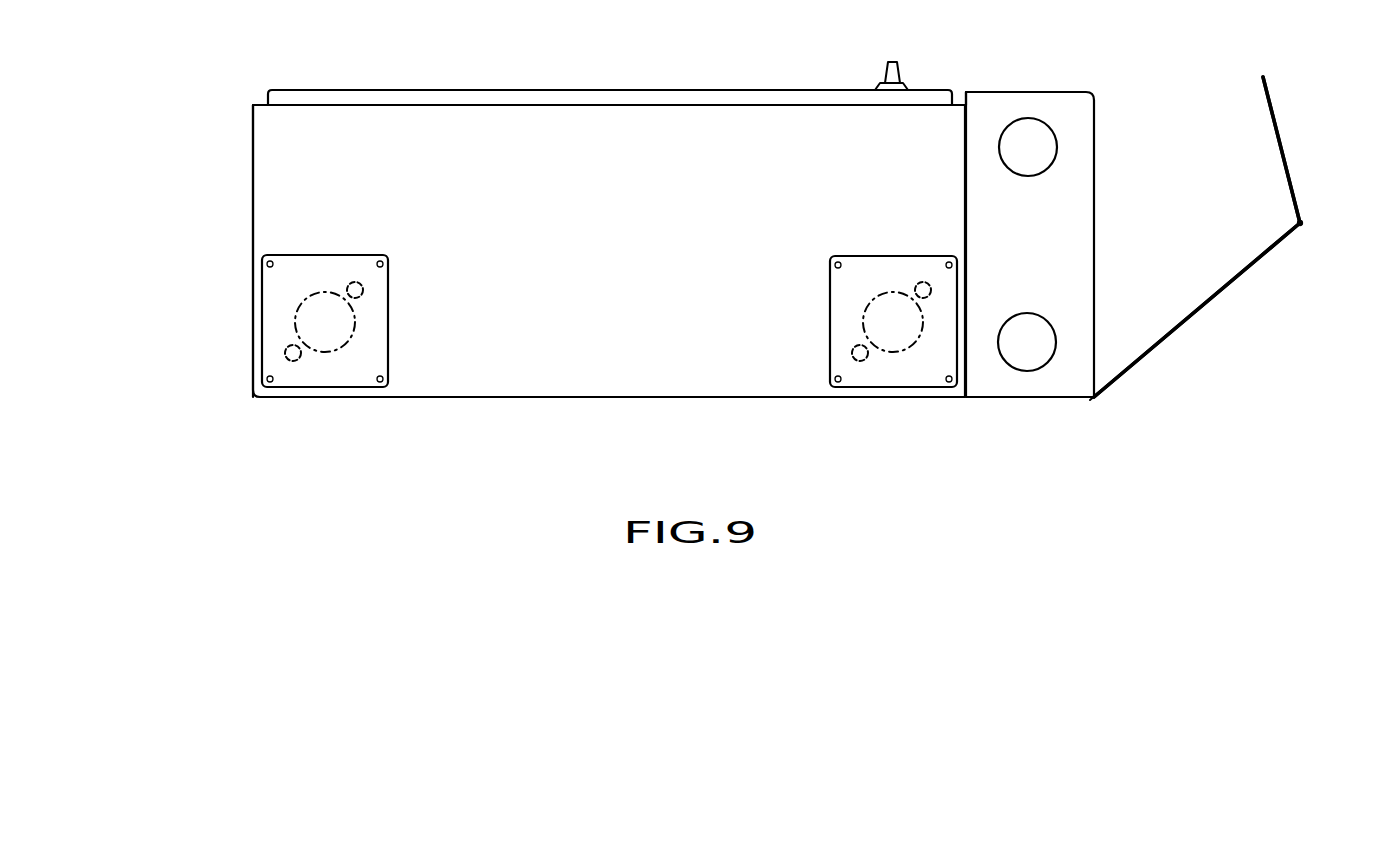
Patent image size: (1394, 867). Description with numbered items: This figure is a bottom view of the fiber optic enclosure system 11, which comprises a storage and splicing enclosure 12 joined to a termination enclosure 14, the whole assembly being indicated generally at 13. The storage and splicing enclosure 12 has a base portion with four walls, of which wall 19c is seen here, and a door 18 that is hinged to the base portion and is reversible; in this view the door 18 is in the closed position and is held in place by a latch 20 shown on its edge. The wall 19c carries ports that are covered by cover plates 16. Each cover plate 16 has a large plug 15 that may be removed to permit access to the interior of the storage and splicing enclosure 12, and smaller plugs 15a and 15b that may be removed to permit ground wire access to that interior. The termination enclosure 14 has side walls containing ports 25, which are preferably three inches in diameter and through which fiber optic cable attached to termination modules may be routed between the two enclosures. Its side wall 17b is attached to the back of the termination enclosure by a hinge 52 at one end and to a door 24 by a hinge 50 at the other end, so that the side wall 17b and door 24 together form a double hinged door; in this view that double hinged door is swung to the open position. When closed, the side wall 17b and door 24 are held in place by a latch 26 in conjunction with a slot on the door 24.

The electronic enclosure assembly 11 is at (183, 372).
The storage and splicing enclosure 12 is at (252, 233).
The mounting bracket 13 is at (1205, 60).
The termination enclosure 14 is at (1058, 398).
The plugs 15 is at (350, 337).
The plug 15a is at (355, 290).
The plug 15b is at (296, 360).
The cover plates 16 is at (392, 367).
The side wall 17b is at (1232, 292).
The door 18 is at (553, 90).
The wall 19c is at (632, 258).
The latch 20 is at (897, 62).
The door 24 is at (1283, 130).
The ports 25 is at (1028, 120).
The latch 26 is at (985, 92).
The hinge 50 is at (1300, 223).
The hinge 52 is at (1094, 397).